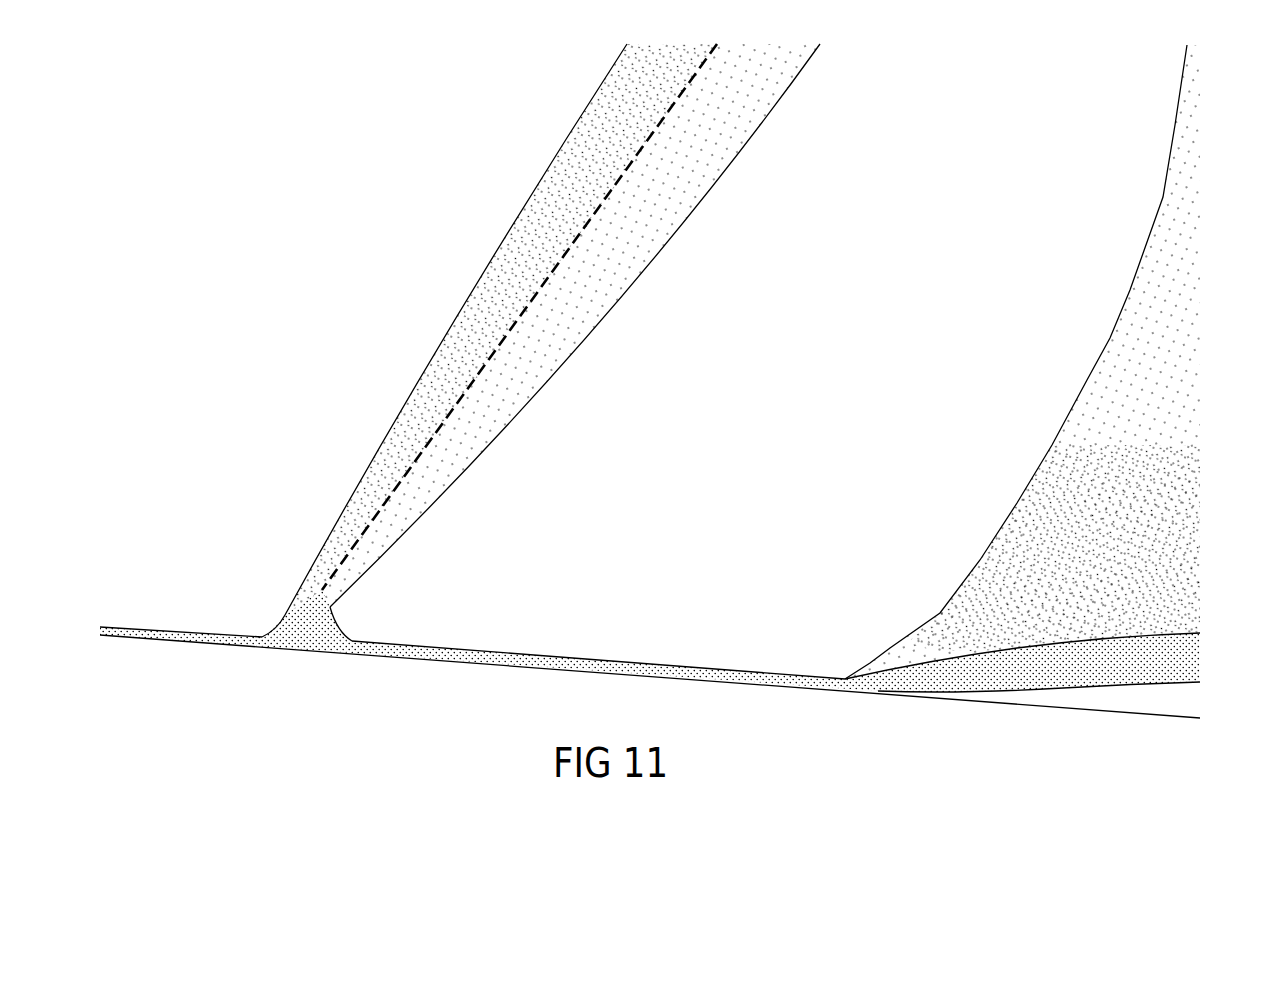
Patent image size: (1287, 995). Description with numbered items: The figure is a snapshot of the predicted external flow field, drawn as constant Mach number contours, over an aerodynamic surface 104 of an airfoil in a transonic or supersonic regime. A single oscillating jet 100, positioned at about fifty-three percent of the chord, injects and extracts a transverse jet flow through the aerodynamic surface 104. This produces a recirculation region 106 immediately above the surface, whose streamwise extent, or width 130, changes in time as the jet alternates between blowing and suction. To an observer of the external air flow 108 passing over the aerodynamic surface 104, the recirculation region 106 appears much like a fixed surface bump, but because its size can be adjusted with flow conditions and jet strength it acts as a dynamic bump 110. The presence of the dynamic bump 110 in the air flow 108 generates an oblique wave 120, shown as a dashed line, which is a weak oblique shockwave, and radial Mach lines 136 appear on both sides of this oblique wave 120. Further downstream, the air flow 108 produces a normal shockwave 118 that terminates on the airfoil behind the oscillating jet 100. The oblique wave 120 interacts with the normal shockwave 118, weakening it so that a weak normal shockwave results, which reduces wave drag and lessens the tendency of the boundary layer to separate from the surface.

The oscillating jet 100 is at (330, 670).
The aerodynamic surface 104 is at (549, 668).
The recirculation region 106 is at (330, 625).
The external air flow 108 is at (280, 312).
The dynamic bump 110 is at (265, 608).
The normal shockwave 118 is at (1148, 285).
The oblique wave 120 is at (552, 262).
The width 130 is at (609, 312).
The radial Mach lines 136 is at (532, 182).